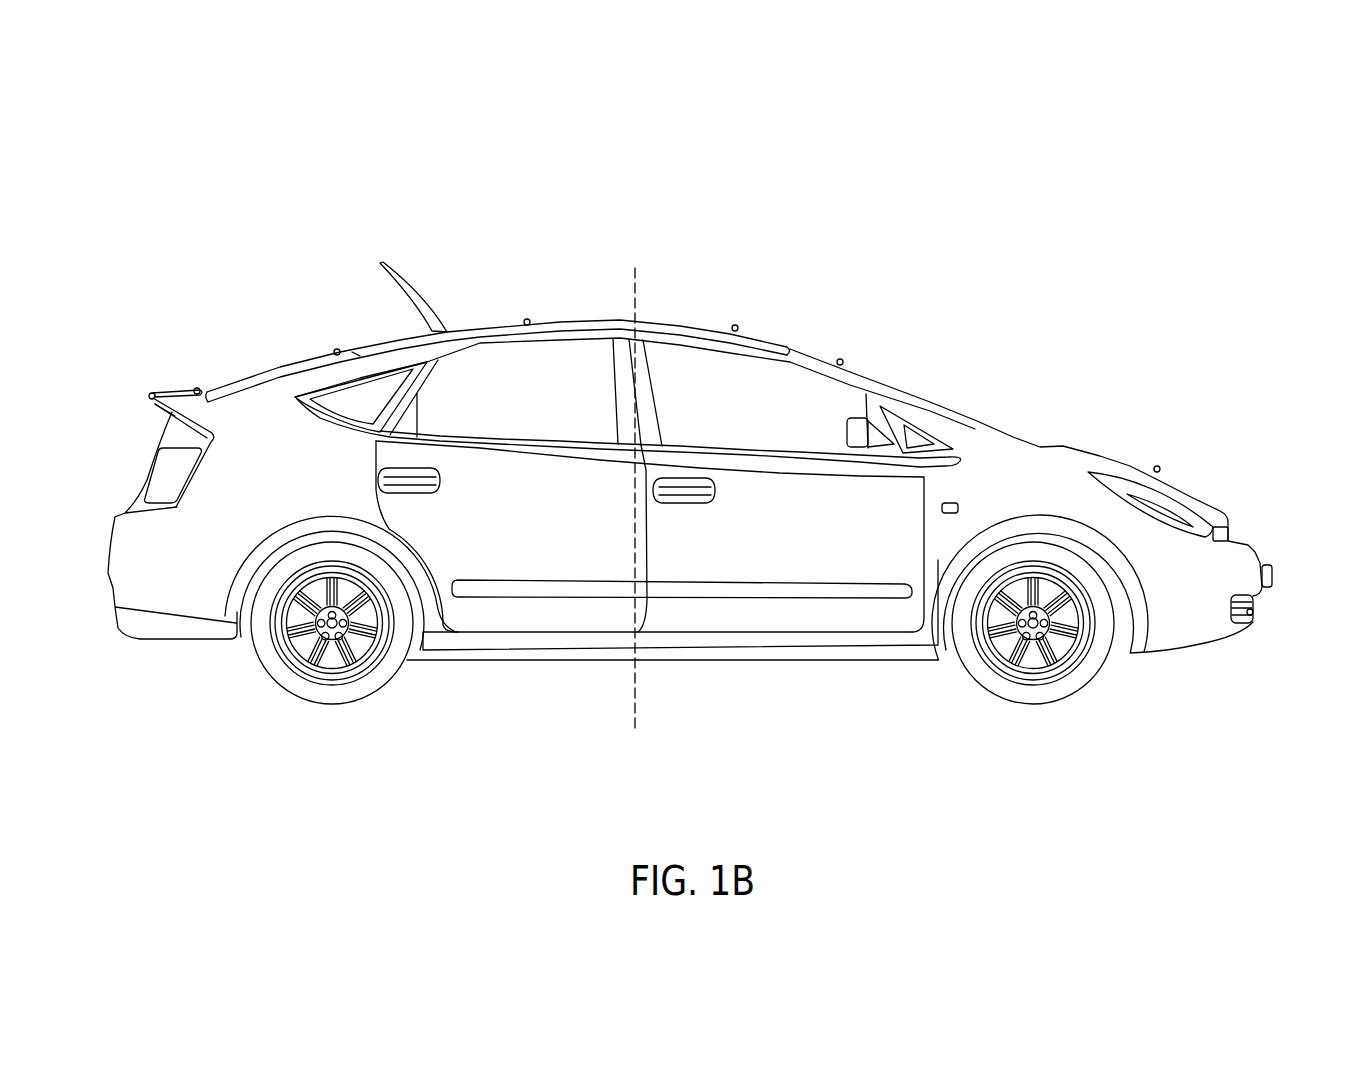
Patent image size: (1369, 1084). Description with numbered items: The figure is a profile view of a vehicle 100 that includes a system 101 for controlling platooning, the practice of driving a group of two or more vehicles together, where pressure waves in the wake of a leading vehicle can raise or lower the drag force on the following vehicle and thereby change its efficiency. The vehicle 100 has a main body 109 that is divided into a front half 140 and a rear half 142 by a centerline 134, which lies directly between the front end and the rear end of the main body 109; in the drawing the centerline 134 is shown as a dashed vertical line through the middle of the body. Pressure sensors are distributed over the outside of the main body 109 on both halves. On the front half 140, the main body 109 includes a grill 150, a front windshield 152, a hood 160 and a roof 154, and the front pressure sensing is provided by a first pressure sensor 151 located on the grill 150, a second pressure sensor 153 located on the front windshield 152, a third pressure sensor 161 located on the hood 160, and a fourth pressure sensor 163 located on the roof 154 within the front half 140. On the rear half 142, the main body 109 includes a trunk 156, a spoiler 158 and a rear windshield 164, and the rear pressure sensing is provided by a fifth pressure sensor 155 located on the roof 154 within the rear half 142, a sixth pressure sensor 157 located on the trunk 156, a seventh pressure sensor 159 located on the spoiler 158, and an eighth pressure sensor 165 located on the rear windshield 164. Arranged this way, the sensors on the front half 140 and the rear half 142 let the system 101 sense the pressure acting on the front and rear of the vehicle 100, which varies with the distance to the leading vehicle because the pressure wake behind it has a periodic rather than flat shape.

The vehicle 100 is at (715, 432).
The system 101 is at (529, 423).
The main body 109 is at (531, 587).
The centerline 134 is at (640, 268).
The front half 140 is at (1060, 438).
The rear half 142 is at (295, 355).
The grill 150 is at (1253, 626).
The first pressure sensor 151 is at (1254, 611).
The front windshield 152 is at (910, 392).
The second pressure sensor 153 is at (842, 359).
The roof 154 is at (578, 320).
The fifth pressure sensor 155 is at (525, 319).
The trunk 156 is at (170, 392).
The sixth pressure sensor 157 is at (198, 388).
The spoiler 158 is at (158, 407).
The seventh pressure sensor 159 is at (149, 395).
The hood 160 is at (1138, 466).
The third pressure sensor 161 is at (1160, 468).
The fourth pressure sensor 163 is at (737, 326).
The rear windshield 164 is at (355, 352).
The eighth pressure sensor 165 is at (336, 349).